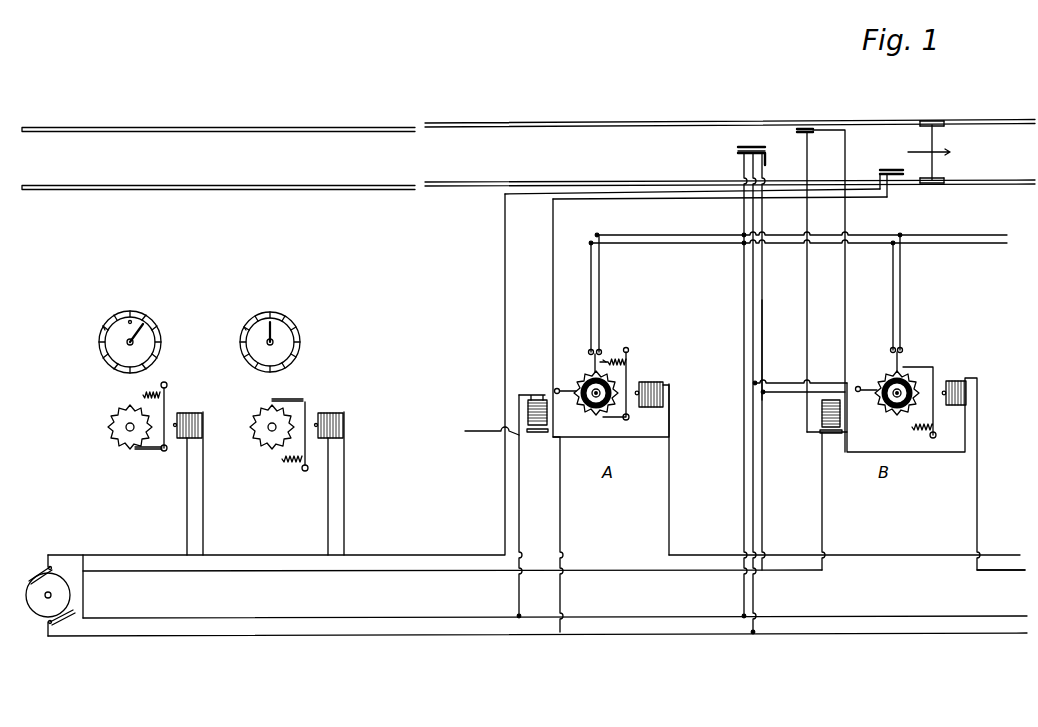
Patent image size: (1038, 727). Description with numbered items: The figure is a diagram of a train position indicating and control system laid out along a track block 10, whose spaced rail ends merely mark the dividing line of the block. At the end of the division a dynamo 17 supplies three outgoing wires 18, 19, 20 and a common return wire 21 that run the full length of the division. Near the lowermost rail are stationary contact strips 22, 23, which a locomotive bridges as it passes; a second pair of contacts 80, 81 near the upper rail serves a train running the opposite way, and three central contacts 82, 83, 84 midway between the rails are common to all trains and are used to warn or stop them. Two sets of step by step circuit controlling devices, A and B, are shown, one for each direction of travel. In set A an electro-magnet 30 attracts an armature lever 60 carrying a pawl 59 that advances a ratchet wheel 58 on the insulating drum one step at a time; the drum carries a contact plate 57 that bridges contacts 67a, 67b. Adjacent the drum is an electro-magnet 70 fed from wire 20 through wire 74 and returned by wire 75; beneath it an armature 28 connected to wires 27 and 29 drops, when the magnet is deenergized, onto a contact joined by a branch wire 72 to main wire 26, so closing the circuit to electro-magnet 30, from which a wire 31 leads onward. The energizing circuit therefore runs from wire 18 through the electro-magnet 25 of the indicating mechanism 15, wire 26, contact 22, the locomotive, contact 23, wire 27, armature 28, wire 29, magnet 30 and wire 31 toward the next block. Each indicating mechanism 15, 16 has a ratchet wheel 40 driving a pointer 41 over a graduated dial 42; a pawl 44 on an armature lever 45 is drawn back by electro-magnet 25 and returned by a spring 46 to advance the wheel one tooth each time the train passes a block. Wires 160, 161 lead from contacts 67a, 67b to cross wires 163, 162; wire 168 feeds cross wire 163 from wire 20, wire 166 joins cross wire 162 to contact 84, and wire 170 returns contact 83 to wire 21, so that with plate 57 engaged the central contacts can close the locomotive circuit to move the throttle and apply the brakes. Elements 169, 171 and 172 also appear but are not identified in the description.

The block 10 is at (872, 121).
The indicating mechanism 15 is at (103, 281).
The indicating mechanism 16 is at (254, 292).
The dynamo 17 is at (42, 616).
The outgoing wire 18 is at (140, 555).
The outgoing wire 19 is at (147, 571).
The outgoing wire 20 is at (147, 612).
The common return wire 21 is at (144, 636).
The contact strip 22 is at (896, 170).
The contact strip 23 is at (890, 180).
The electro-magnet 25 is at (190, 416).
The wire 26 is at (484, 555).
The wire 27 is at (607, 199).
The armature 28 is at (543, 433).
The wire 29 is at (616, 438).
The electro-magnet 30 is at (657, 382).
The wire 31 is at (670, 533).
The ratchet wheel 40 is at (117, 432).
The hand or pointer 41 is at (110, 339).
The graduated dial 42 is at (107, 323).
The pawl 44 is at (158, 452).
The armature lever 45 is at (167, 395).
The spring 46 is at (142, 394).
The contact plate 57 is at (580, 375).
The ratchet wheel 58 is at (591, 408).
The pawl 59 is at (612, 415).
The armature lever 60 is at (628, 362).
The contact 67a is at (578, 378).
The contact 67b is at (604, 358).
The electro-magnet 70 is at (540, 398).
The branch wire 72 is at (498, 431).
The wire 74 is at (520, 513).
The wire 75 is at (561, 532).
The contact 80 is at (792, 282).
The contact 81 is at (796, 130).
The contact 82 is at (746, 147).
The contact 83 is at (738, 150).
The contact 84 is at (740, 153).
The wire 160 is at (590, 320).
The wire 161 is at (600, 314).
The cross wire 162 is at (815, 233).
The cross wire 163 is at (812, 244).
The wire 166 is at (742, 217).
The wire 168 is at (750, 456).
The wire 169 is at (764, 217).
The wire 170 is at (764, 350).
The wire 171 is at (824, 383).
The electromagnet coil 172 is at (800, 395).